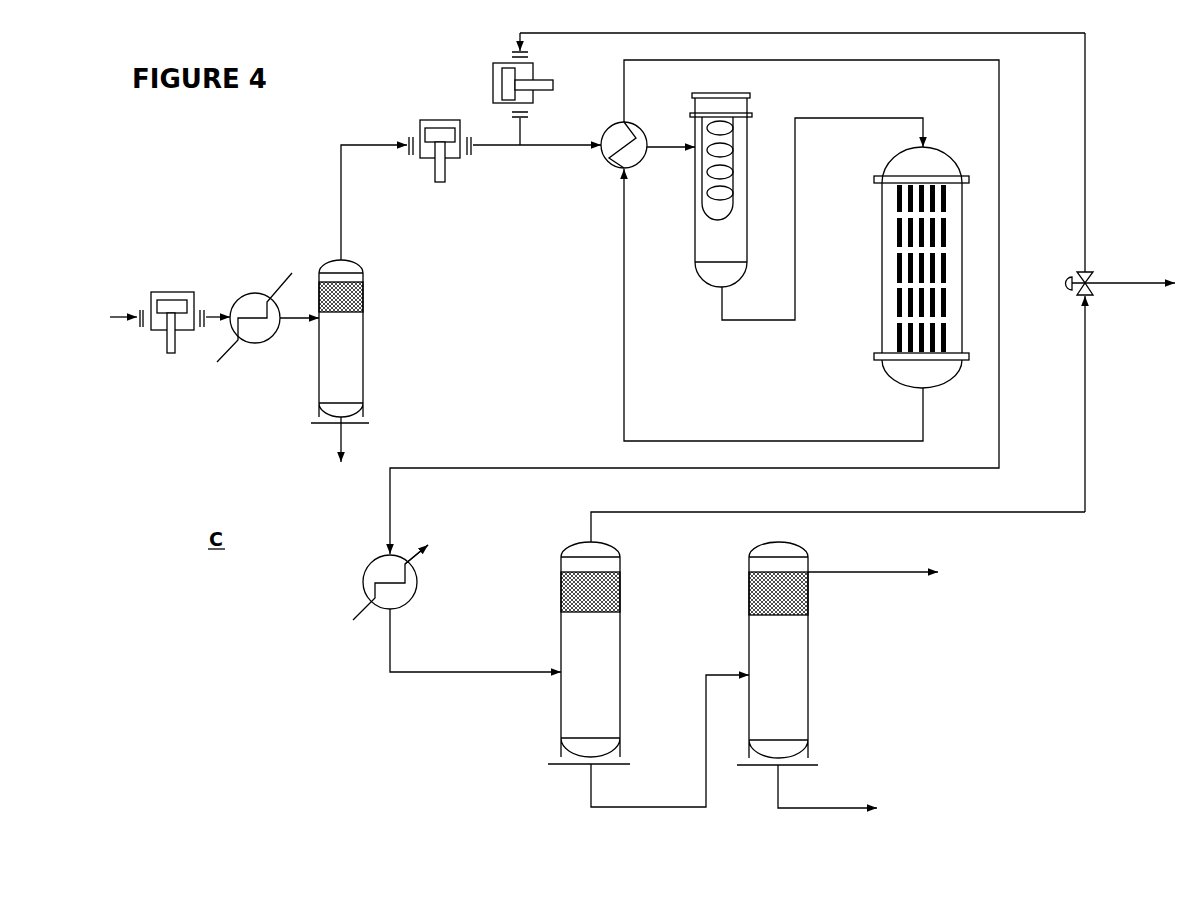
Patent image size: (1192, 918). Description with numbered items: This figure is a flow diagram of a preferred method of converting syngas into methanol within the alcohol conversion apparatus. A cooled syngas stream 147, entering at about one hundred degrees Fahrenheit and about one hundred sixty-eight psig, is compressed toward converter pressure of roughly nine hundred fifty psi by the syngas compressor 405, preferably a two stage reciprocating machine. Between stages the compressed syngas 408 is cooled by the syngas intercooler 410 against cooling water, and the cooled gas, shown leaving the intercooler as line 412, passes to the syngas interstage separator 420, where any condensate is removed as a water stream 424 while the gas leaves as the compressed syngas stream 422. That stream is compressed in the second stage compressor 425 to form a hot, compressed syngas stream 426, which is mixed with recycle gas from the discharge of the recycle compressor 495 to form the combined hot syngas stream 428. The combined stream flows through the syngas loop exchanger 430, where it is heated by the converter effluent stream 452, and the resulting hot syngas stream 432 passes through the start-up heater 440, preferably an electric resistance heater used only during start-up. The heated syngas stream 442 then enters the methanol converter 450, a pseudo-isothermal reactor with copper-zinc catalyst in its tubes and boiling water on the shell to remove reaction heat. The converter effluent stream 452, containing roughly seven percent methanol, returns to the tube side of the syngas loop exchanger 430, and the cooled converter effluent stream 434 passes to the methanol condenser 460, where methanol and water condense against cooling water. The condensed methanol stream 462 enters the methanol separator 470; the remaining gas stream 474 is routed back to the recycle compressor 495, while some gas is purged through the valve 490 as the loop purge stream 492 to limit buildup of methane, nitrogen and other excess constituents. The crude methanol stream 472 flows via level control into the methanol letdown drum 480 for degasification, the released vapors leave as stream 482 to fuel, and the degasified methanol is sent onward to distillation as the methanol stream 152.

The cooled syngas stream 147 is at (124, 320).
The syngas compressor 405 is at (183, 290).
The compressed syngas 408 is at (212, 324).
The syngas intercooler 410 is at (260, 291).
The heated feed line 412 is at (305, 324).
The syngas interstage separator 420 is at (365, 375).
The compressed syngas stream 422 is at (339, 230).
The water stream 424 is at (339, 437).
The second stage compressor 425 is at (440, 118).
The hot, compressed syngas stream 426 is at (505, 148).
The combined hot syngas stream 428 is at (557, 143).
The syngas loop exchanger 430 is at (600, 156).
The hot syngas stream 432 is at (688, 143).
The cooled converter effluent stream 434 is at (1001, 193).
The start-up heater 440 is at (693, 233).
The heated syngas stream 442 is at (752, 326).
The methanol converter 450 is at (880, 292).
The converter effluent stream 452 is at (622, 329).
The methanol condenser 460 is at (376, 557).
The condensed methanol stream 462 is at (478, 678).
The methanol separator 470 is at (561, 590).
The crude methanol stream 472 is at (662, 810).
The remaining gas stream 474 is at (653, 511).
The methanol letdown drum 480 is at (748, 592).
The vapor stream 482 is at (920, 578).
The purge valve 490 is at (1094, 274).
The loop purge stream 492 is at (1158, 288).
The recycle compressor 495 is at (492, 88).
The methanol stream 152 is at (838, 813).